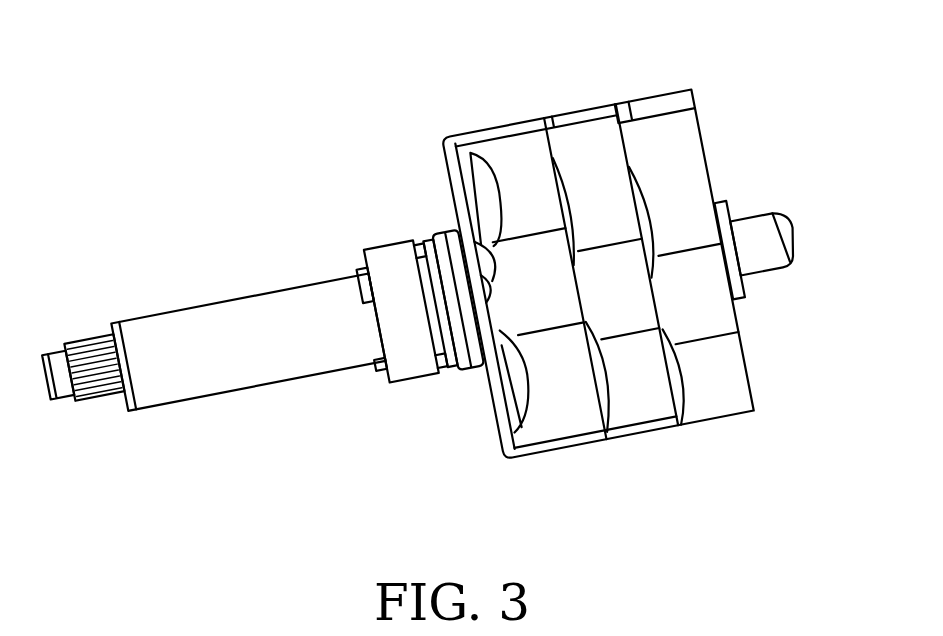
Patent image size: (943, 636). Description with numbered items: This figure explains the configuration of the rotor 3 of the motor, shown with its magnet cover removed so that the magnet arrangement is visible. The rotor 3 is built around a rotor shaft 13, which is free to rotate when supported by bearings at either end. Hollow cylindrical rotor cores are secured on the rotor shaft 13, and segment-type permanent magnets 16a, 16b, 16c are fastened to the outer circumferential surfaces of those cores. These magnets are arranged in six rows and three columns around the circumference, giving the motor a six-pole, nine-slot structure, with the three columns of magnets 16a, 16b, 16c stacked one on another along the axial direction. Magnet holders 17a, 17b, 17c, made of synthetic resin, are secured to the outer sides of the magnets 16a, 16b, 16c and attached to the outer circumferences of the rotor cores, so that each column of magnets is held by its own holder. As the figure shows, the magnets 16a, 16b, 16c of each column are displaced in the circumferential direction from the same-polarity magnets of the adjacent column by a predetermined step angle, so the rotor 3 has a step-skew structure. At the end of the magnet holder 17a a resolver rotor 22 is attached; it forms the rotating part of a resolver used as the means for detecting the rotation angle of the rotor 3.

The rotor 3 is at (330, 138).
The rotor shaft 13 is at (250, 372).
The resolver rotor 22 is at (412, 356).
The magnet 16a is at (487, 150).
The magnet 16b is at (572, 143).
The magnet 16c is at (685, 167).
The magnet holder 17a is at (535, 262).
The magnet holder 17b is at (618, 266).
The magnet holder 17c is at (661, 108).